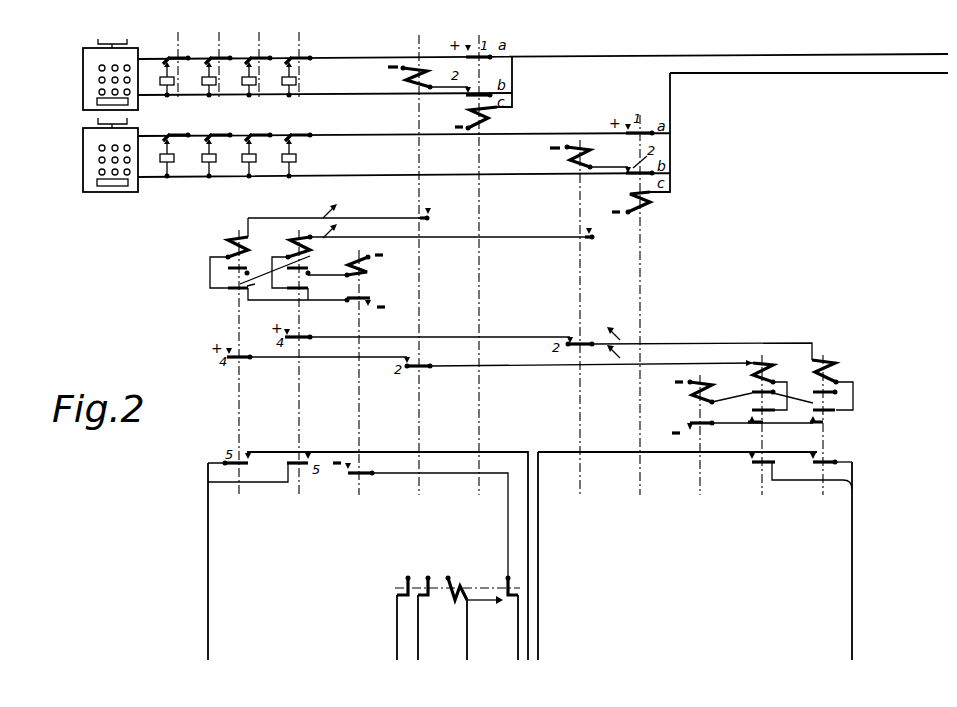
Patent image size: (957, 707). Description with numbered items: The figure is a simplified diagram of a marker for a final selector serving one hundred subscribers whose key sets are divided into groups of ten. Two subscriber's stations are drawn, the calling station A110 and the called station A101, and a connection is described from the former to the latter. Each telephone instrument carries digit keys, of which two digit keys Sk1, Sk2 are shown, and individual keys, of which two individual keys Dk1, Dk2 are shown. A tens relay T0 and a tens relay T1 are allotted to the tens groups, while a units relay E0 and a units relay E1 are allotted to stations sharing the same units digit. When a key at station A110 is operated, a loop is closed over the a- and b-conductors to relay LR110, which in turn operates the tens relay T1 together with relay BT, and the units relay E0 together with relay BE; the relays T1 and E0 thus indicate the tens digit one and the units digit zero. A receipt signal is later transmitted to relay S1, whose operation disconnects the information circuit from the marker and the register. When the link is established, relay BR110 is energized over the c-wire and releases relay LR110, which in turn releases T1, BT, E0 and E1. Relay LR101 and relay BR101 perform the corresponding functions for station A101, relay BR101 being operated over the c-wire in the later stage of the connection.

The subscriber's station A110 is at (84, 74).
The subscriber's station A101 is at (81, 155).
The individual key Dk1 is at (180, 93).
The individual key Dk2 is at (221, 93).
The digit key Sk1 is at (261, 93).
The digit key Sk2 is at (299, 93).
The tens relay T1 is at (330, 363).
The tens relay T0 is at (441, 372).
The relay BT is at (420, 422).
The line relay LR110 is at (427, 281).
The relay BR110 is at (489, 281).
The line relay LR101 is at (590, 333).
The relay BR101 is at (654, 321).
The relay BE is at (742, 451).
The units relay E0 is at (791, 441).
The units relay E1 is at (824, 441).
The receipt signal relay S1 is at (434, 610).